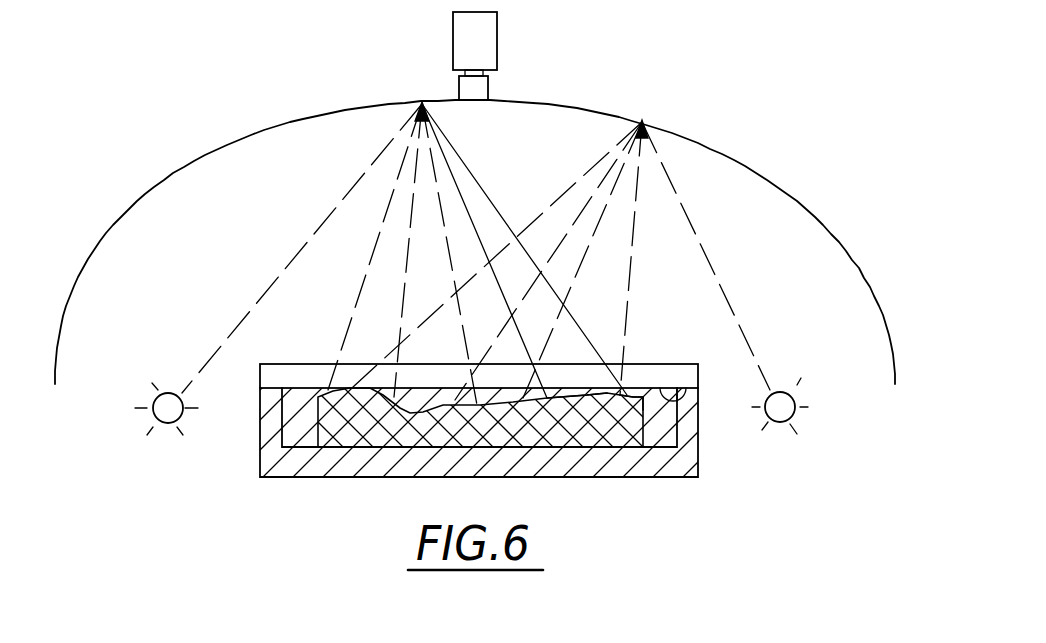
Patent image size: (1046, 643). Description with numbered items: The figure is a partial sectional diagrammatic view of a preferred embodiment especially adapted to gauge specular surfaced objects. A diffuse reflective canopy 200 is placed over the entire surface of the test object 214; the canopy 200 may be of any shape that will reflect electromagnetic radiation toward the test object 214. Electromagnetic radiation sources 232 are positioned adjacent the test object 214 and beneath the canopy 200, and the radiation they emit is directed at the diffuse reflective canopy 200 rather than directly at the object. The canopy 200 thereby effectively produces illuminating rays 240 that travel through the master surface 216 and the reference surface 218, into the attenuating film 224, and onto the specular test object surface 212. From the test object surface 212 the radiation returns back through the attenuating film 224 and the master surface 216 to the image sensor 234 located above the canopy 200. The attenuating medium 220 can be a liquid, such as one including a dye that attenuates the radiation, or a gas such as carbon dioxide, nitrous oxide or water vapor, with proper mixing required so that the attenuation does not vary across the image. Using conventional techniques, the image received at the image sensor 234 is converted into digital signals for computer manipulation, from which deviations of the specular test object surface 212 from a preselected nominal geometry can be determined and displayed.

The diffuse reflective canopy 200 is at (731, 152).
The test object surface 212 is at (329, 390).
The test object 214 is at (317, 397).
The master surface 216 is at (635, 390).
The reference surface 218 is at (700, 387).
The attenuating medium 220 is at (289, 422).
The attenuating film 224 is at (573, 388).
The electromagnetic radiation sources 232 is at (155, 402).
The image sensor 234 is at (498, 47).
The illuminating rays 240 is at (398, 167).